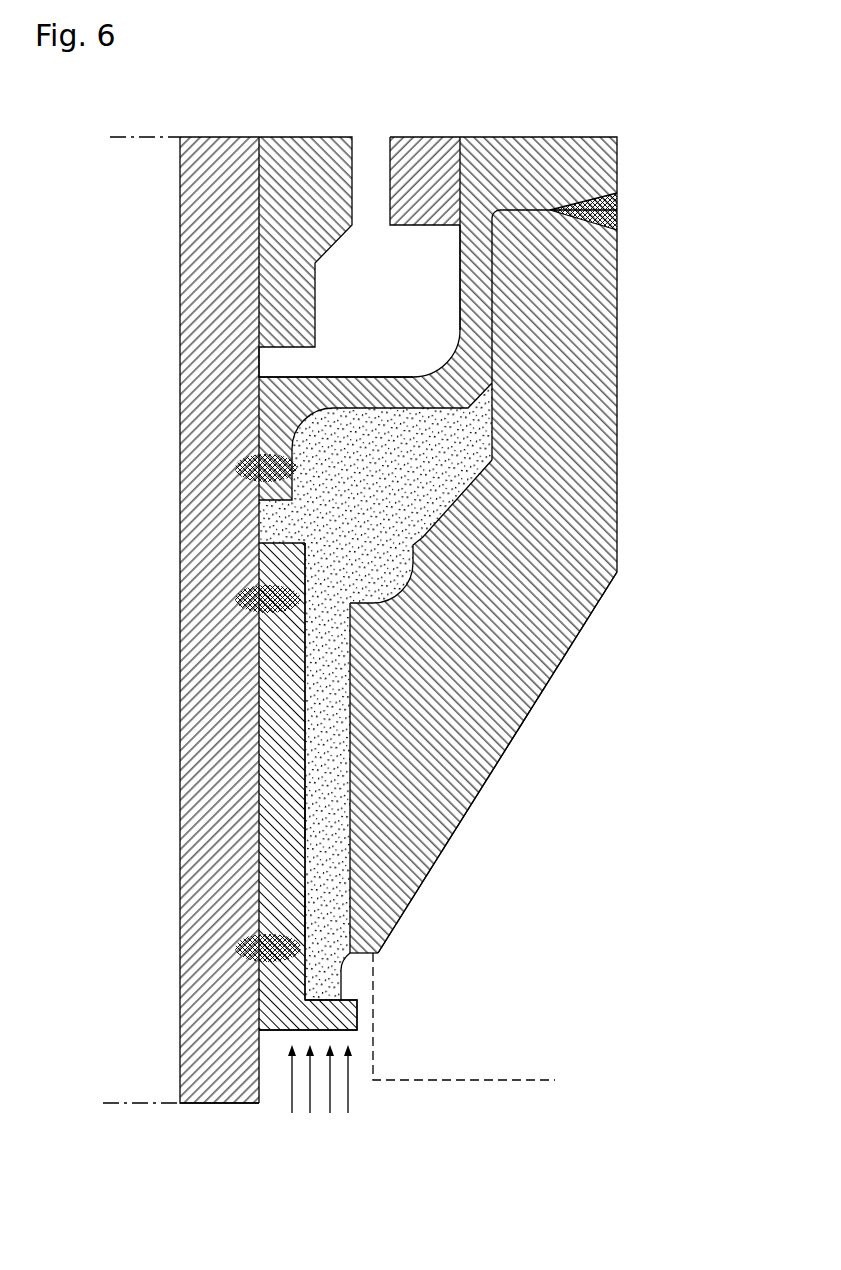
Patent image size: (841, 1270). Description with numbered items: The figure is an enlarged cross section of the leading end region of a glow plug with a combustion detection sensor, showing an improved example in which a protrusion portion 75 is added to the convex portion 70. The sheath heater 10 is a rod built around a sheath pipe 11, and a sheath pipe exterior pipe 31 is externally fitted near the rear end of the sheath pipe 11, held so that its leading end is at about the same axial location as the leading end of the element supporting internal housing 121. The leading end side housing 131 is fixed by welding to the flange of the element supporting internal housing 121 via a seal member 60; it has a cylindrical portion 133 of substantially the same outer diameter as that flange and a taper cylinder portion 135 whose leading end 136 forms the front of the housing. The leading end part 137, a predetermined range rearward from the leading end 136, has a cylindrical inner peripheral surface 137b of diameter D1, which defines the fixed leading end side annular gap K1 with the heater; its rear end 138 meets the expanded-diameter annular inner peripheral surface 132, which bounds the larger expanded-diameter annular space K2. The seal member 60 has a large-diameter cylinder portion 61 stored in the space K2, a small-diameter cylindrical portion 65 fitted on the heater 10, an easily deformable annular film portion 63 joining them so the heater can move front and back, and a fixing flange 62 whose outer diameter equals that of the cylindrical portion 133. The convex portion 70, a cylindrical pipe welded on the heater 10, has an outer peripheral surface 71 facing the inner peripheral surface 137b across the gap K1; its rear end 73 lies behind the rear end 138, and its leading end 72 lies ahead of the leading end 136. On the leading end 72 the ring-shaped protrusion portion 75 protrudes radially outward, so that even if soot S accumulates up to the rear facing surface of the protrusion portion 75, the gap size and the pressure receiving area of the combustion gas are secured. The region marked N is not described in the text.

The sheath heater 10 is at (207, 1110).
The sheath pipe 11 is at (222, 137).
The sheath pipe exterior pipe 31 is at (286, 137).
The seal member 60 is at (412, 372).
The large-diameter cylinder portion 61 is at (460, 258).
The fixing flange 62 is at (617, 170).
The annular film portion 63 is at (357, 377).
The small-diameter cylindrical portion 65 is at (292, 490).
The convex portion 70 is at (314, 910).
The outer peripheral surface 71 is at (308, 822).
The leading end 72 is at (272, 1033).
The rear end 73 is at (283, 543).
The protrusion portion 75 is at (357, 1017).
The element supporting internal housing 121 is at (420, 137).
The leading end side housing 131 is at (563, 673).
The expanded-diameter annular inner peripheral surface 132 is at (492, 453).
The cylindrical portion 133 is at (617, 375).
The taper cylinder portion 135 is at (510, 762).
The leading end 136 is at (373, 958).
The leading end part 137 is at (345, 755).
The inner peripheral surface 137b is at (350, 712).
The rear end 138 is at (347, 603).
The leading end side annular gap K1 is at (320, 880).
The expanded-diameter annular space K2 is at (425, 464).
The diameter D1 is at (300, 780).
The soot S is at (340, 978).
The region N is at (473, 1070).